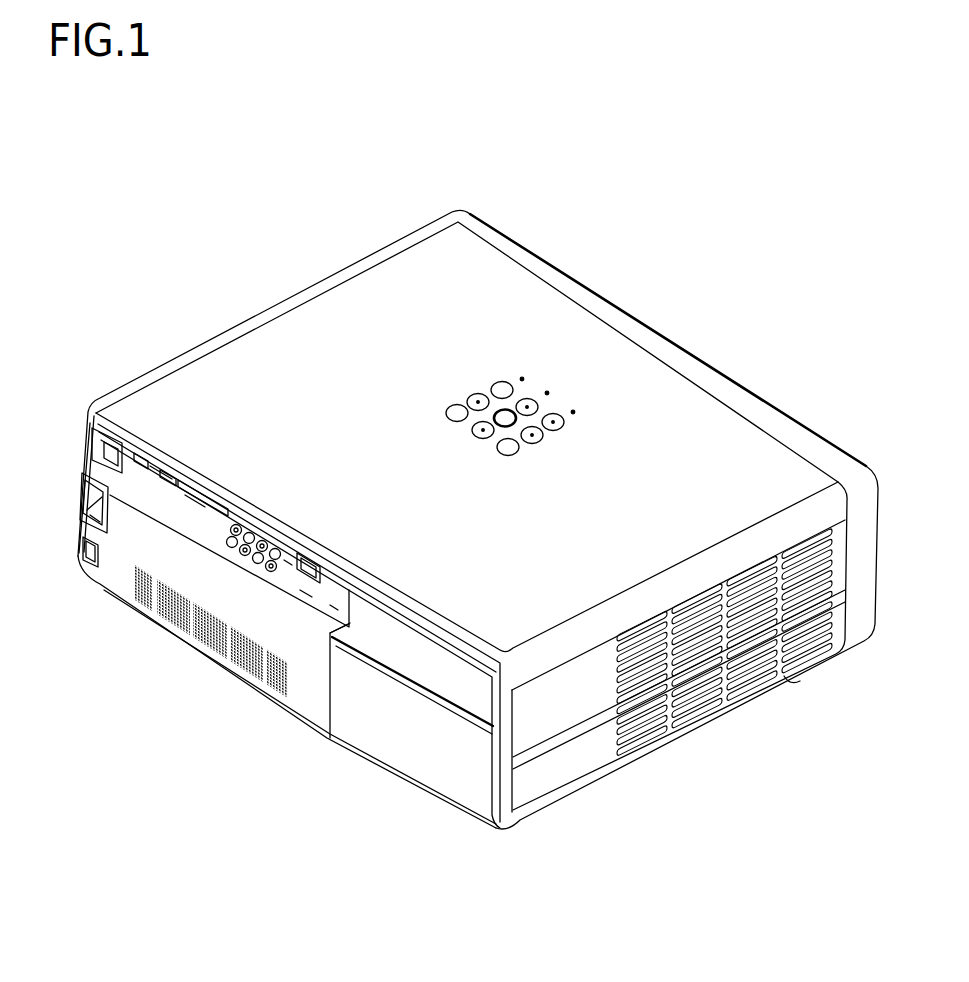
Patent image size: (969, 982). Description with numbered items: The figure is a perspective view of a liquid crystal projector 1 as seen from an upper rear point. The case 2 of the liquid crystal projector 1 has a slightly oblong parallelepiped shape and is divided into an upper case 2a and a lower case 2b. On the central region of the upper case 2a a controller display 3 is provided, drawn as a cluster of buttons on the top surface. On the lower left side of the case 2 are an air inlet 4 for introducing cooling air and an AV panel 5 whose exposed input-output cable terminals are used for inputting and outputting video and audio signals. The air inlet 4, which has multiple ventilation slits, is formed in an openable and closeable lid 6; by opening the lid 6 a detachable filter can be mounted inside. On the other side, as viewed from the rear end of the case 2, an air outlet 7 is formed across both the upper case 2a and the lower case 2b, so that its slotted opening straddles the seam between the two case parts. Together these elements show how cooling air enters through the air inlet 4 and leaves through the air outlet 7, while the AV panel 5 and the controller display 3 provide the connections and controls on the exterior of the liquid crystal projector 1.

The liquid crystal projector 1 is at (192, 264).
The case 2 is at (548, 903).
The upper case 2a is at (542, 703).
The lower case 2b is at (588, 760).
The controller display 3 is at (500, 368).
The air inlet 4 is at (190, 643).
The AV panel 5 is at (197, 522).
The lid 6 is at (310, 675).
The air outlet 7 is at (710, 710).